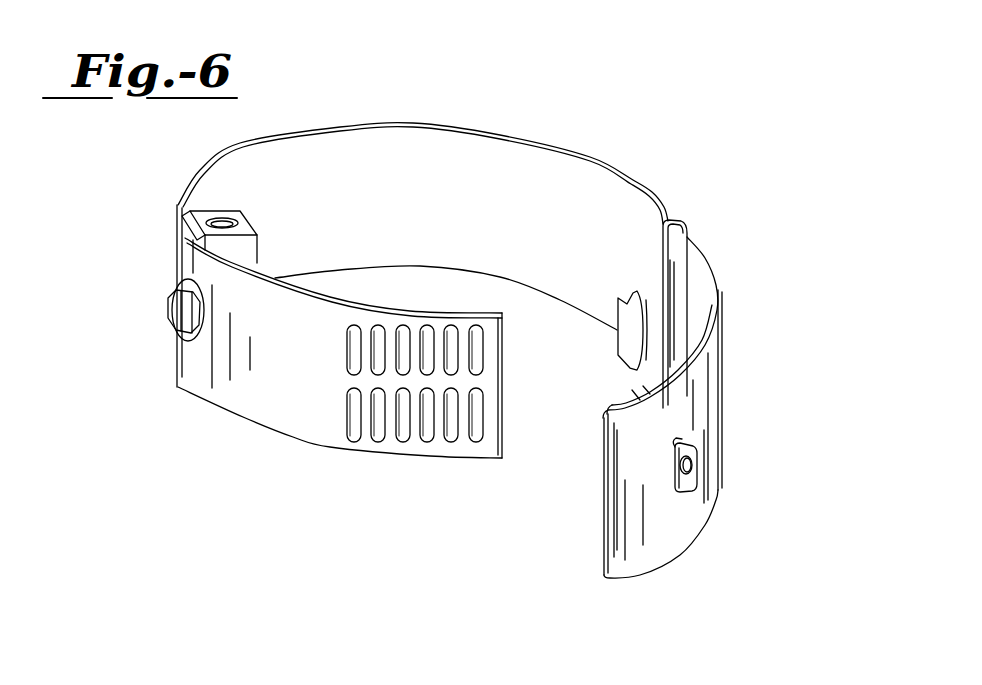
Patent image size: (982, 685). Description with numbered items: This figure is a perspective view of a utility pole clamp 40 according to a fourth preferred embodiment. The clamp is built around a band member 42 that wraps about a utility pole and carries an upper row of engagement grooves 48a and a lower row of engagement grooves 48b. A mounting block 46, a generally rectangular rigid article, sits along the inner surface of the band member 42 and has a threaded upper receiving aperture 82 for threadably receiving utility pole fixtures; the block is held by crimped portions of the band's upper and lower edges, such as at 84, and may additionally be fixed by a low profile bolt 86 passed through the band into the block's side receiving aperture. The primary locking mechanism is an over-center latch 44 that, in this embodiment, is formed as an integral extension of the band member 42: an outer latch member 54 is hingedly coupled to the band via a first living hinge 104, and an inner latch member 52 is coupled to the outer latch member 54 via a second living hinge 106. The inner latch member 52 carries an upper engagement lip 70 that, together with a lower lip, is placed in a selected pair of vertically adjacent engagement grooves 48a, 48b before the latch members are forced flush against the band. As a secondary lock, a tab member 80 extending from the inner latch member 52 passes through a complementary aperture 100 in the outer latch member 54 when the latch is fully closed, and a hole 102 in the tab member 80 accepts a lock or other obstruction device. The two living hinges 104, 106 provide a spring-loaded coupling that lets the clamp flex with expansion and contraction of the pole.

The utility pole clamp 40 is at (673, 187).
The band member 42 is at (313, 384).
The over-center latch 44 is at (722, 375).
The mounting block 46 is at (228, 212).
The upper row of engagement grooves 48a is at (355, 322).
The lower row of engagement grooves 48b is at (376, 443).
The inner latch member 52 is at (628, 388).
The outer latch member 54 is at (720, 328).
The upper engagement lip 70 is at (625, 338).
The tab member 80 is at (697, 462).
The upper receiving aperture 82 is at (236, 213).
The crimped portion 84 is at (190, 223).
The low profile bolt 86 is at (170, 304).
The complementary aperture 100 is at (680, 443).
The hole 102 is at (690, 472).
The first living hinge 104 is at (683, 233).
The second living hinge 106 is at (602, 513).